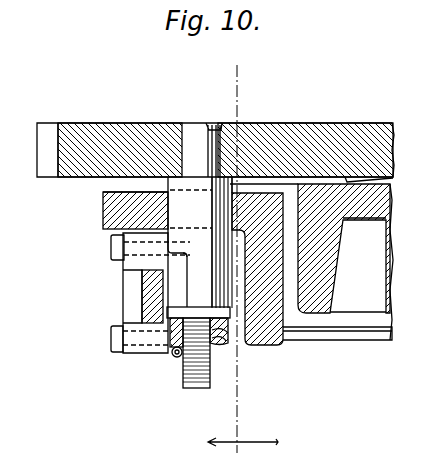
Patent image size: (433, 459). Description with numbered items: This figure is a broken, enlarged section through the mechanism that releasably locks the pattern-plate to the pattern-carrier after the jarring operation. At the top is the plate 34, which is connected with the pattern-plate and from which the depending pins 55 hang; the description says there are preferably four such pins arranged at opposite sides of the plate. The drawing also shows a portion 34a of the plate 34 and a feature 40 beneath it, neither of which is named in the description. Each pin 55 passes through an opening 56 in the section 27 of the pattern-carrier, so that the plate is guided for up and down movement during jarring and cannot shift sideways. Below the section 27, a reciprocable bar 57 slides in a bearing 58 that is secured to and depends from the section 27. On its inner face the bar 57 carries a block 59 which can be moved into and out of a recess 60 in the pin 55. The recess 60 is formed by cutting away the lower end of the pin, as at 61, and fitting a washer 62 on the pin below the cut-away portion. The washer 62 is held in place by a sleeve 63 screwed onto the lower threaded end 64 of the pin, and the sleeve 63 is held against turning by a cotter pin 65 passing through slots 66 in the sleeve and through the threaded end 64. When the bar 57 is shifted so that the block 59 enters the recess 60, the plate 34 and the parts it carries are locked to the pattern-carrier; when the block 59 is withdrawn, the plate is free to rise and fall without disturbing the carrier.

The plate 34 is at (308, 135).
The end portion of cutter bar 34a is at (50, 130).
The cutting edge 40 is at (347, 181).
The depending pins 55 is at (178, 190).
The cut-away portion 61 is at (180, 256).
The openings 56 is at (160, 213).
The section of the pattern-carrier 27 is at (120, 192).
The bearings 58 is at (130, 272).
The blocks 59 is at (170, 292).
The reciprocable bars 57 is at (148, 302).
The washers 62 is at (177, 328).
The slots 66 is at (217, 372).
The threaded ends 64 is at (203, 388).
The cotter pins 65 is at (175, 365).
The sleeves 63 is at (173, 355).
The recesses 60 is at (243, 316).